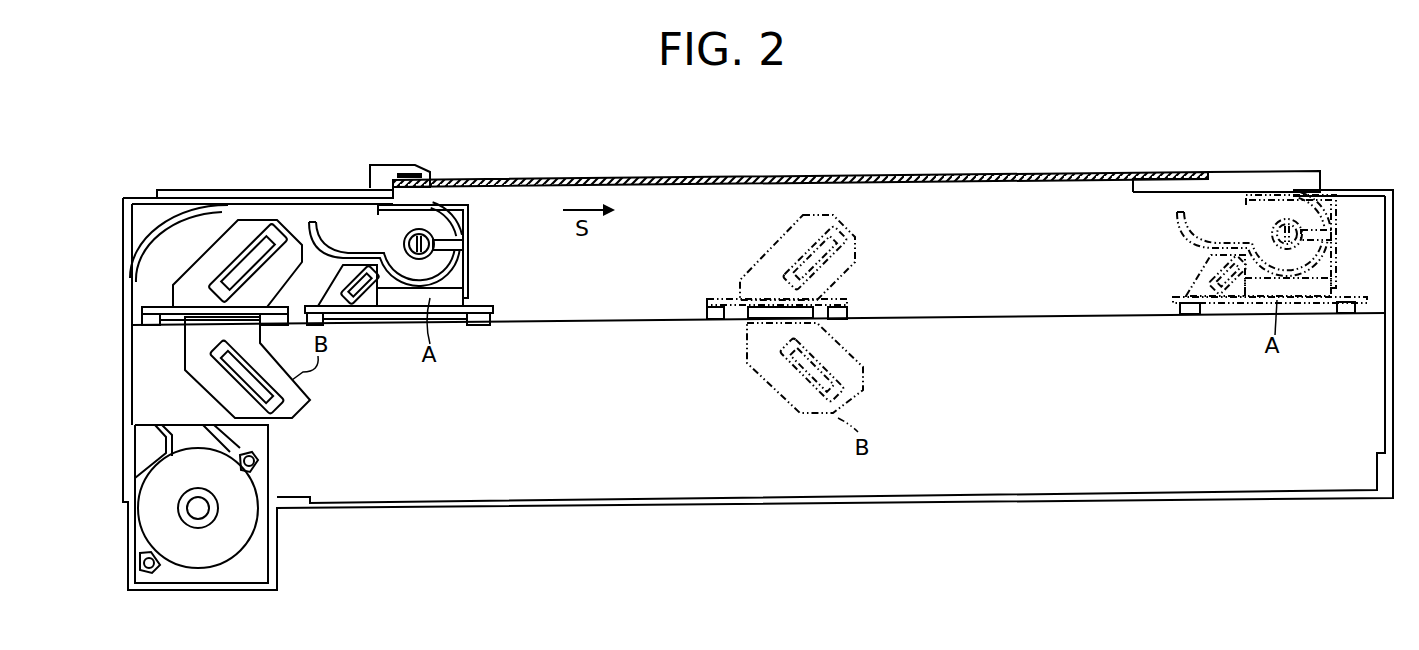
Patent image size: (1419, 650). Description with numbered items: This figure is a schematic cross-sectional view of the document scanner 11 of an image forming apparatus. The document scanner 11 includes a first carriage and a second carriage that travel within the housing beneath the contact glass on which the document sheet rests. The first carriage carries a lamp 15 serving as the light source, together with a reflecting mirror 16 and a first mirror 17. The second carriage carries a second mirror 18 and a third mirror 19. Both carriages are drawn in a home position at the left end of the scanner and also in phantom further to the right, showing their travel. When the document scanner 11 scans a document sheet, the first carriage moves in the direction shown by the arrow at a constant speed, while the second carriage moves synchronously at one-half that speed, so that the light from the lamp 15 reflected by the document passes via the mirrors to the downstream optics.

The document scanner 11 is at (106, 299).
The lamp 15 is at (440, 235).
The reflecting mirror 16 is at (448, 263).
The first mirror 17 is at (363, 302).
The second mirror 18 is at (247, 250).
The third mirror 19 is at (290, 405).